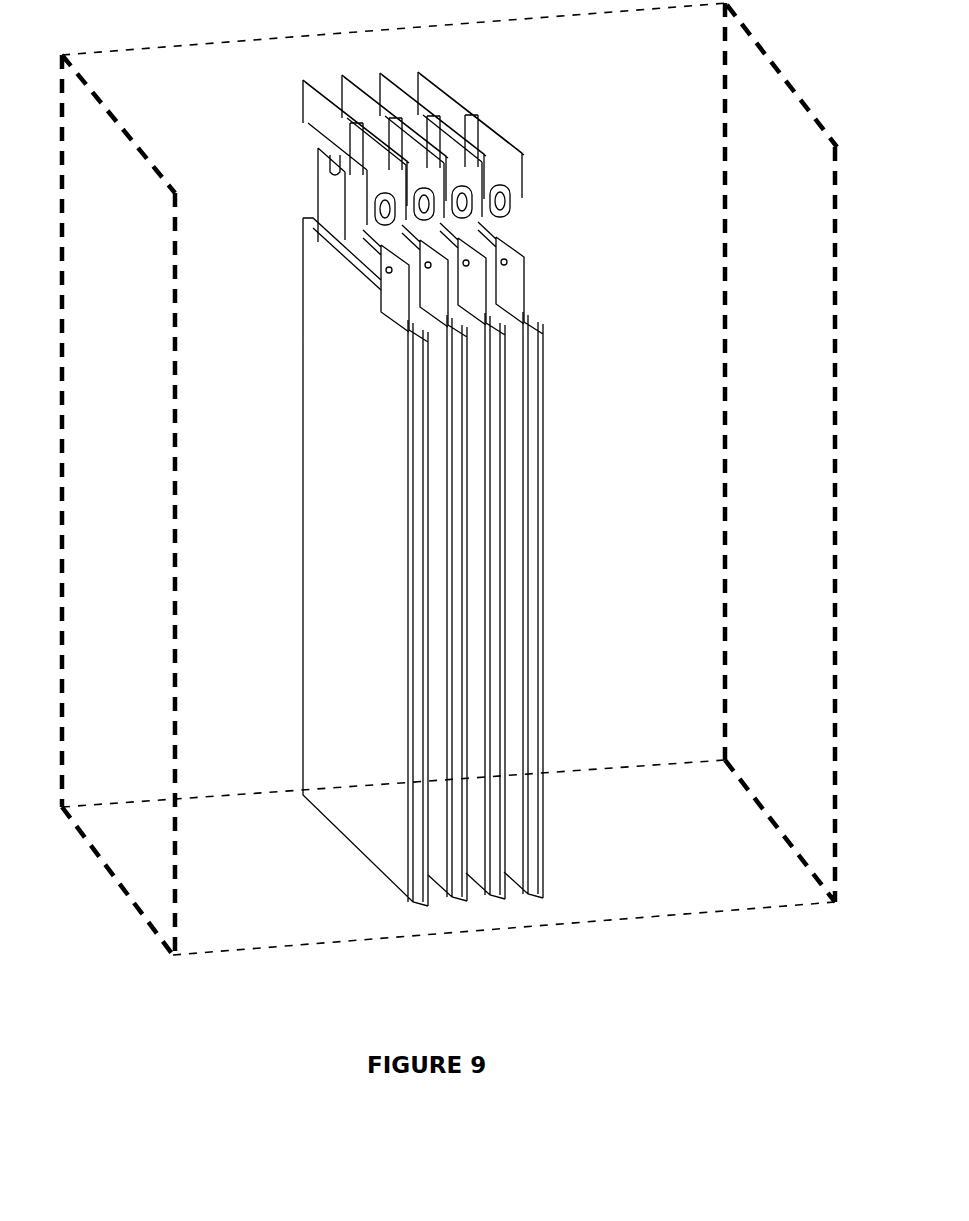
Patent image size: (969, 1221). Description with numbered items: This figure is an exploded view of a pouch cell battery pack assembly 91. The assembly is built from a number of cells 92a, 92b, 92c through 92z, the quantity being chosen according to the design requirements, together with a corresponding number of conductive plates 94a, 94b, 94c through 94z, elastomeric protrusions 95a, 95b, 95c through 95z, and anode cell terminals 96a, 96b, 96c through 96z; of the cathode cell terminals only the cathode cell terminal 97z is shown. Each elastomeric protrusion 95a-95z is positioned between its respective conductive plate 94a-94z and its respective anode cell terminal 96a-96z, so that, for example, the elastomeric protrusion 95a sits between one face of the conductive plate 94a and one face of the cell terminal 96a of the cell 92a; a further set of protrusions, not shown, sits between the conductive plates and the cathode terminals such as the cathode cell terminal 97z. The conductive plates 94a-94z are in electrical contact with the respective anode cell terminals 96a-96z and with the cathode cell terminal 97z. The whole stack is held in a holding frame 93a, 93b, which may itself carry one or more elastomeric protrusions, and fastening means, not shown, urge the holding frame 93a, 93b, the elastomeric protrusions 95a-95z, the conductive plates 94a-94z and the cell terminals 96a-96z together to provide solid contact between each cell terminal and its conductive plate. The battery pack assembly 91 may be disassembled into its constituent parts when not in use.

The pouch cell battery pack assembly 91 is at (553, 127).
The cell 92a is at (535, 885).
The cell 92b is at (490, 880).
The cell 92c is at (460, 885).
The cell 92z is at (418, 890).
The holding frame 93a is at (140, 466).
The holding frame 93b is at (803, 430).
The conductive plate 94a is at (433, 98).
The conductive plate 94b is at (395, 98).
The conductive plate 94c is at (352, 90).
The conductive plate 94z is at (315, 110).
The elastomeric protrusion 95a is at (505, 200).
The elastomeric protrusion 95b is at (462, 209).
The elastomeric protrusion 95c is at (422, 212).
The elastomeric protrusion 95z is at (380, 207).
The anode cell terminal 96a is at (515, 277).
The anode cell terminal 96b is at (467, 277).
The anode cell terminal 96c is at (430, 281).
The anode cell terminal 96z is at (390, 282).
The cathode cell terminal 97z is at (332, 195).